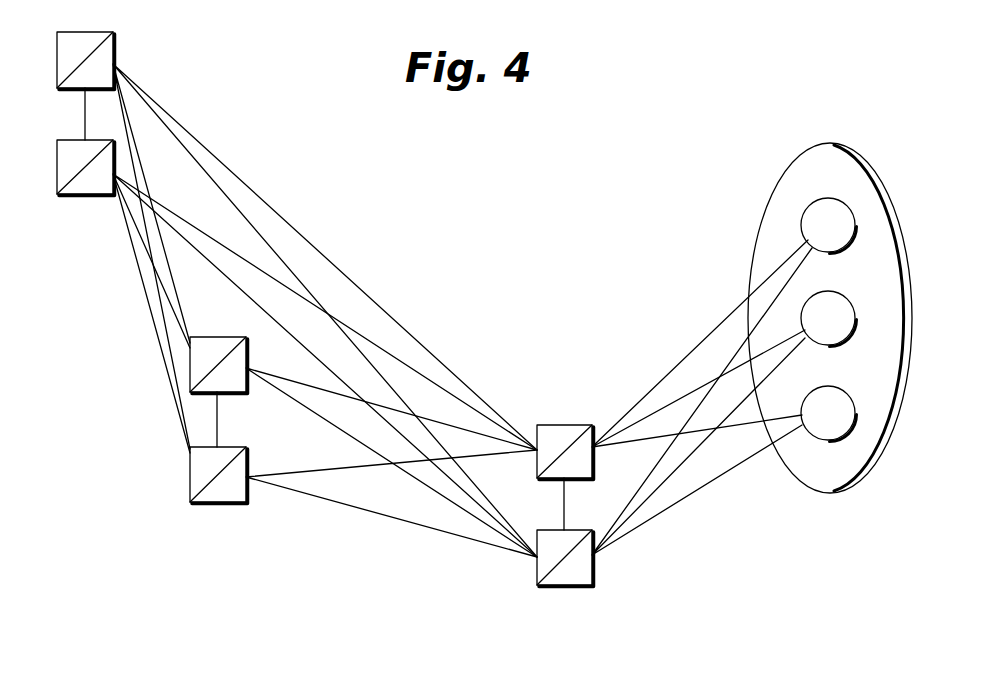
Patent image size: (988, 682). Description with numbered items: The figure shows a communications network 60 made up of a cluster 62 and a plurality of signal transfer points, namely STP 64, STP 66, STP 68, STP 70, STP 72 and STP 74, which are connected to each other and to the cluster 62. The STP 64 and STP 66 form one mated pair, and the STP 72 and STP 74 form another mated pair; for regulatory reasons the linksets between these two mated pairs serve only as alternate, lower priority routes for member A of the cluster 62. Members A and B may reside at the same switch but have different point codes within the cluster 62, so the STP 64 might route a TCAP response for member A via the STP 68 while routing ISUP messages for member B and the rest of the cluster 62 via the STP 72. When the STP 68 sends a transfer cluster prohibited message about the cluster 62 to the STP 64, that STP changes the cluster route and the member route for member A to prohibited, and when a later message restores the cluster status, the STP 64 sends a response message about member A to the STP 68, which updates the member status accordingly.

The communications network 60 is at (628, 130).
The cluster 62 is at (770, 196).
The STP 64 is at (114, 40).
The STP 66 is at (85, 196).
The STP 68 is at (190, 372).
The STP 70 is at (190, 477).
The STP 72 is at (565, 425).
The STP 74 is at (593, 573).